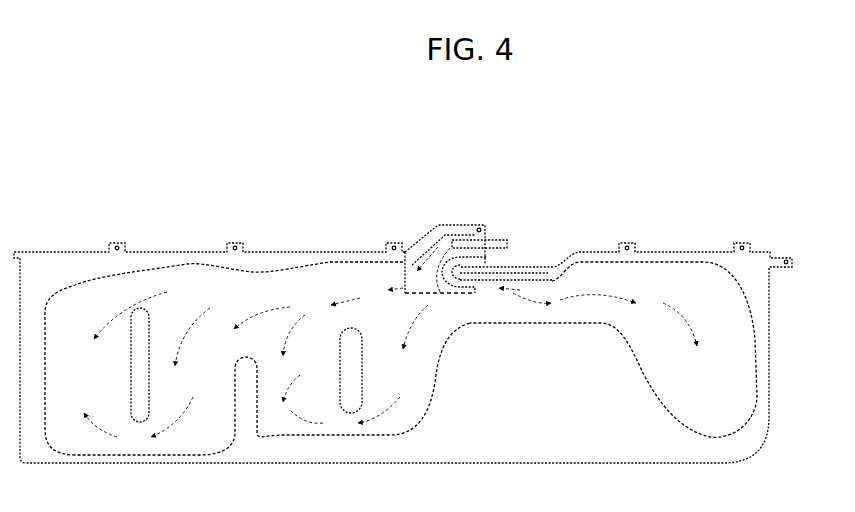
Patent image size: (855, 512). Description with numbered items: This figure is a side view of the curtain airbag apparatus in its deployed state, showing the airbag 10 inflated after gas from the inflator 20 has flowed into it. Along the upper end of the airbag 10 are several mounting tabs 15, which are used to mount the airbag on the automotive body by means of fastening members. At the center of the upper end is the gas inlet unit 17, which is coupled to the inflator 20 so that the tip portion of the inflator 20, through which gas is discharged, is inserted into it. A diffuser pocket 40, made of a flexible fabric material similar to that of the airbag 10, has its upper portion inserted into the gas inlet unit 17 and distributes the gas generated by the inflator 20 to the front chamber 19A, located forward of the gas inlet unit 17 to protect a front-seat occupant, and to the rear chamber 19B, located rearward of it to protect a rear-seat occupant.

The airbag 10 is at (711, 233).
The mounting tabs 15 is at (117, 243).
The gas inlet unit 17 is at (455, 225).
The front chamber 19A is at (277, 293).
The rear chamber 19B is at (731, 396).
The inflator 20 is at (514, 234).
The diffuser pocket 40 is at (419, 246).